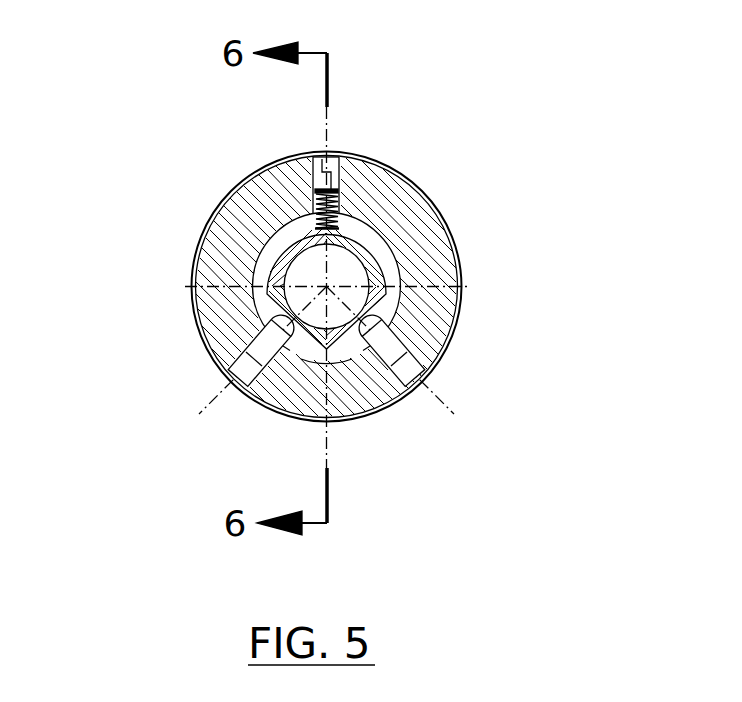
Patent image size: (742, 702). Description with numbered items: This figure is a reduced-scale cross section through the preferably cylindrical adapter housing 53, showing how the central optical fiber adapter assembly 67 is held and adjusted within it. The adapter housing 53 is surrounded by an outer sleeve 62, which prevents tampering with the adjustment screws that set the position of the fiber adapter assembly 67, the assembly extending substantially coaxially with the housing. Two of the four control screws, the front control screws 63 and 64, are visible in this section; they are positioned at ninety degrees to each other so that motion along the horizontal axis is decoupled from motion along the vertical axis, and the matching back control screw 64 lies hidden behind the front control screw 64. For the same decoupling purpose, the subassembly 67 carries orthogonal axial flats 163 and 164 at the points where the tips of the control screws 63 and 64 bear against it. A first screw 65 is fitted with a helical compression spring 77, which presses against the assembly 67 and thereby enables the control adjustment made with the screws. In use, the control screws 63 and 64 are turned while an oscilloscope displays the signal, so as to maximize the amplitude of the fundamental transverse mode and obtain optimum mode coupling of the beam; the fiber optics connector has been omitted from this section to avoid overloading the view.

The adapter housing 53 is at (397, 218).
The outer sleeve 62 is at (367, 417).
The control screw 63 is at (174, 350).
The control screw 64 is at (395, 345).
The first screw 65 is at (290, 156).
The optical fiber adapter assembly 67 is at (287, 251).
The helical compression spring 77 is at (340, 178).
The axial flat 163 is at (164, 298).
The axial flat 164 is at (488, 299).